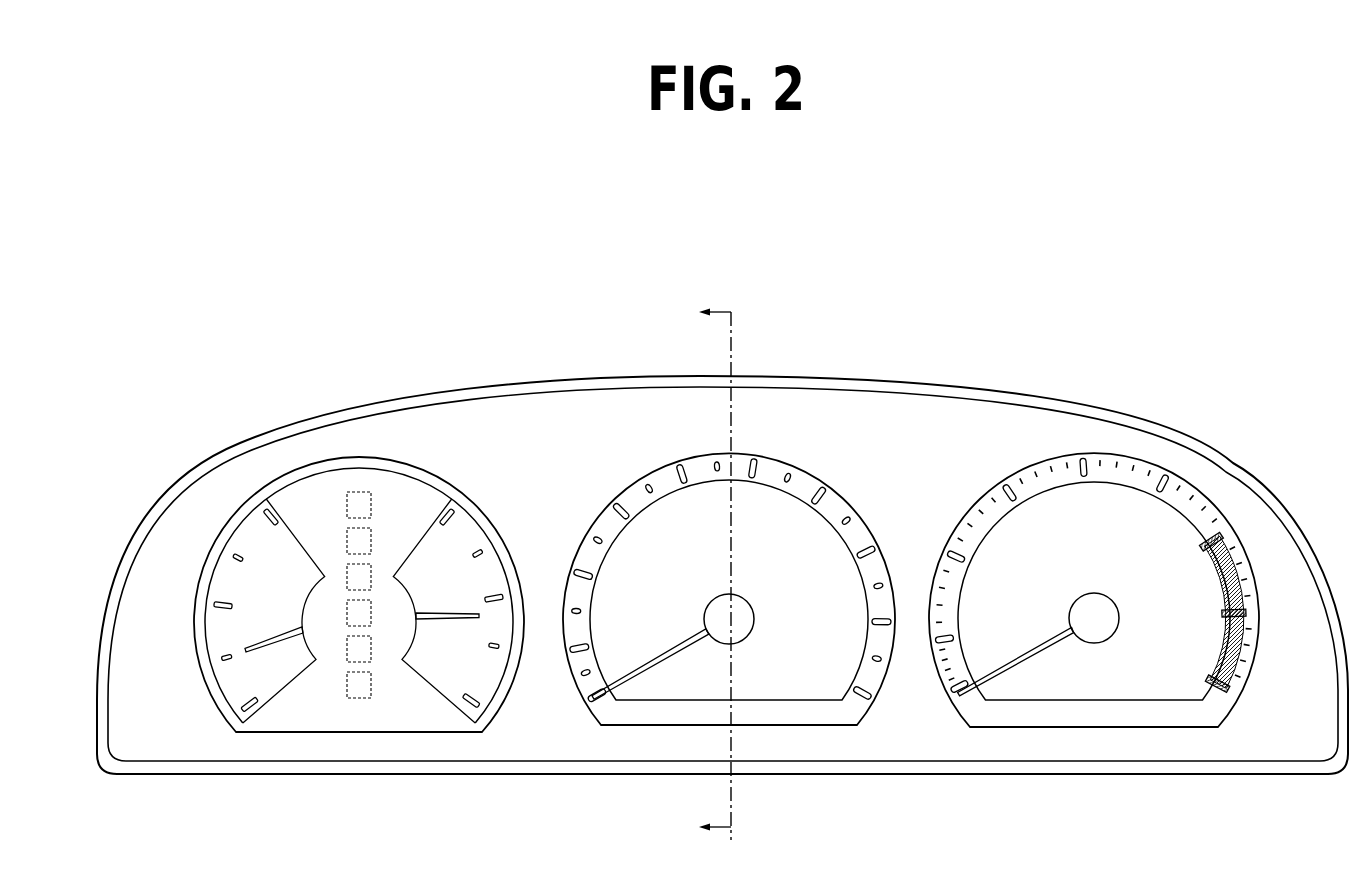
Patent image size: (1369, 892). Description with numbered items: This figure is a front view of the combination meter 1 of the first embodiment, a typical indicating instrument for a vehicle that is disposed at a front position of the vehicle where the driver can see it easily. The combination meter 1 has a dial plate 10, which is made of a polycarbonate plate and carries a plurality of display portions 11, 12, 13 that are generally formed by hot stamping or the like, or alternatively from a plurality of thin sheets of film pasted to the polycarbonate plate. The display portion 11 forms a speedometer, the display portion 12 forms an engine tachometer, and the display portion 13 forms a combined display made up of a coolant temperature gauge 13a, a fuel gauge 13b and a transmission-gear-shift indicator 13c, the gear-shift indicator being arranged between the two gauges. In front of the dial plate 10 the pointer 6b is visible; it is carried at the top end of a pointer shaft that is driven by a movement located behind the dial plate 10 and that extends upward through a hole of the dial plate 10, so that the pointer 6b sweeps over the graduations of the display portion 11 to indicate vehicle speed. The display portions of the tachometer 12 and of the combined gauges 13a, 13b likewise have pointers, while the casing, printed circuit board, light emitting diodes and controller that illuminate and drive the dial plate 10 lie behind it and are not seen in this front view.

The combination meter 1 is at (147, 312).
The dial plate 10 is at (487, 420).
The display portion 11 is at (665, 463).
The display portion 12 is at (1046, 460).
The display portion 13 is at (337, 452).
The coolant temperature gauge 13a is at (285, 505).
The fuel gauge 13b is at (433, 510).
The transmission-gear-shift indicator 13c is at (362, 493).
The pointer 6b is at (671, 660).